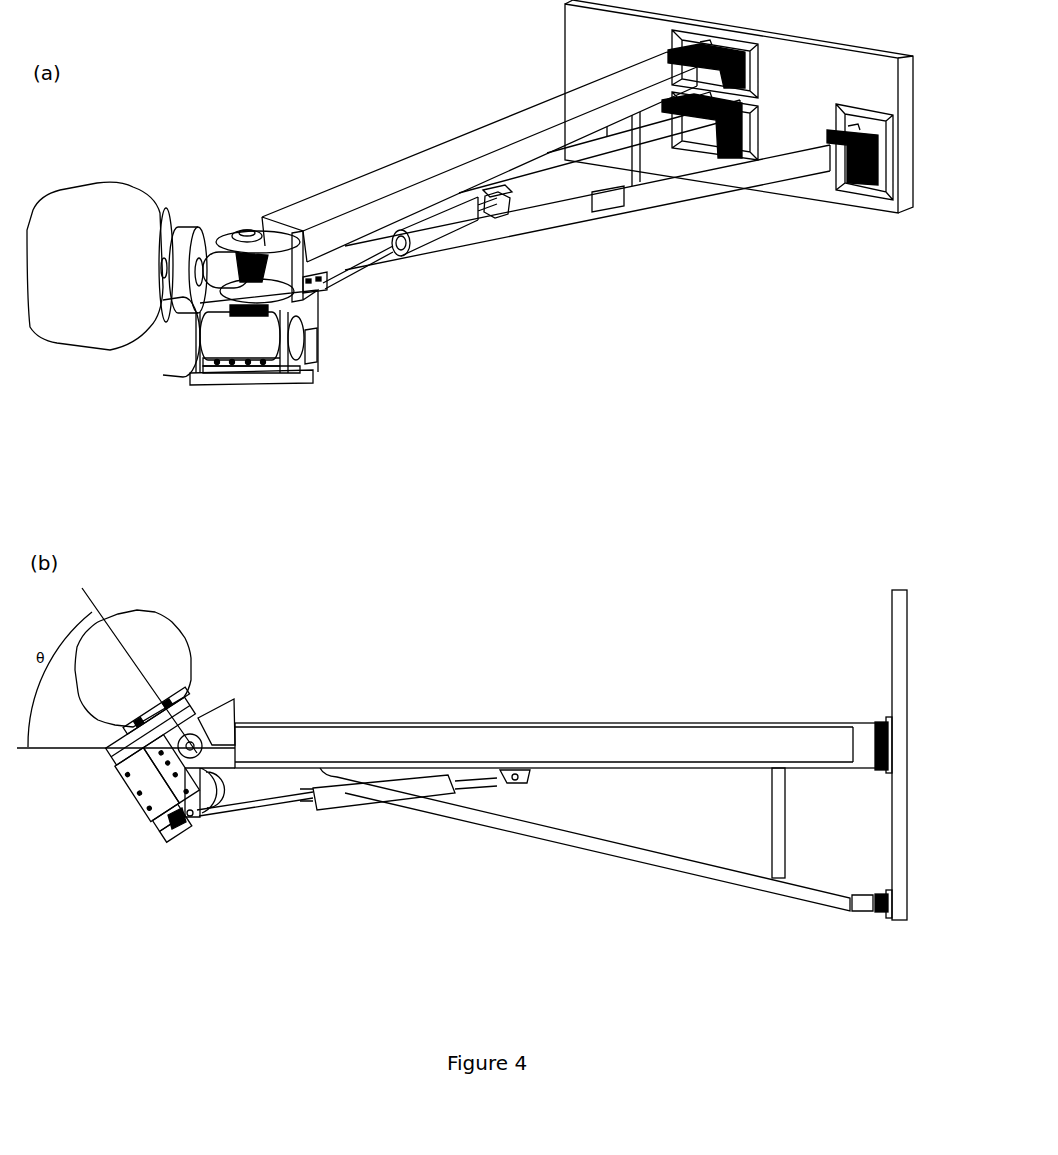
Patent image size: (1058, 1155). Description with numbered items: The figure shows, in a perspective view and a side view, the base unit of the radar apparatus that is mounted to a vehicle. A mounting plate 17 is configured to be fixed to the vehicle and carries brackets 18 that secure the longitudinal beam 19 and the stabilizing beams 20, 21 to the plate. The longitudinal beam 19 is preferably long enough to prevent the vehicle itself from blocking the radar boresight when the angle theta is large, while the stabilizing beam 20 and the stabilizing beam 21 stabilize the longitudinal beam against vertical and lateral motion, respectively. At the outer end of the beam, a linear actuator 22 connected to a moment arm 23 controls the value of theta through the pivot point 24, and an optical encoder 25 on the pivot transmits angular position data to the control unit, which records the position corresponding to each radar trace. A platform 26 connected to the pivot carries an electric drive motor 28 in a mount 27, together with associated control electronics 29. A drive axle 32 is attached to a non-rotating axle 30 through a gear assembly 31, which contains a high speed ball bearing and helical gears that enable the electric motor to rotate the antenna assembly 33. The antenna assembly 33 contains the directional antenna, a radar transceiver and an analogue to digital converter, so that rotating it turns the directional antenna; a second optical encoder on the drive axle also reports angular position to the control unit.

The mounting plate 17 is at (818, 60).
The brackets 18 is at (715, 48).
The longitudinal beam 19 is at (533, 150).
The stabilizing beam 20 is at (502, 128).
The stabilizing beam 21 is at (673, 205).
The linear actuator 22 is at (433, 238).
The moment arm 23 is at (277, 247).
The pivot point 24 is at (248, 262).
The optical encoder 25 is at (245, 233).
The platform 26 is at (273, 383).
The mount 27 is at (245, 371).
The electric drive motor 28 is at (225, 366).
The control electronics 29 is at (318, 345).
The non-rotating axle 30 is at (217, 263).
The gear assembly 31 is at (188, 232).
The drive axle 32 is at (164, 218).
The antenna assembly 33 is at (105, 195).